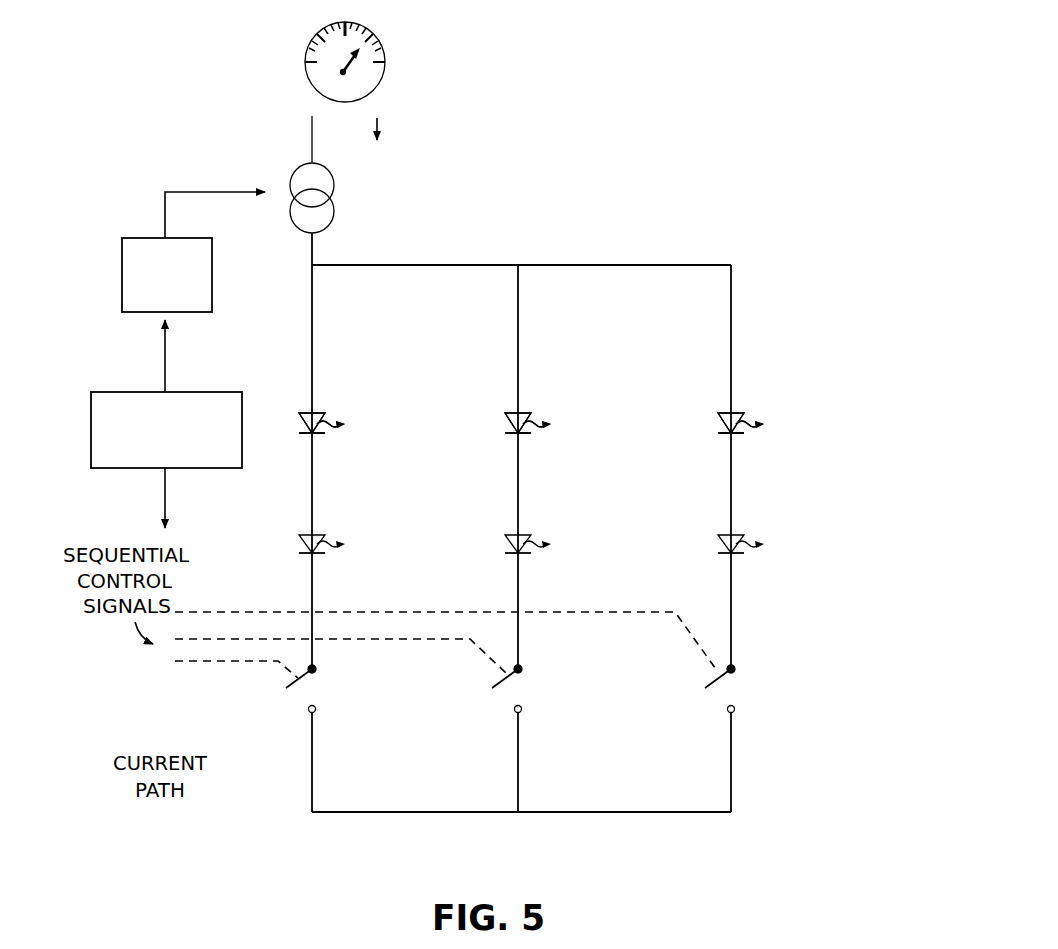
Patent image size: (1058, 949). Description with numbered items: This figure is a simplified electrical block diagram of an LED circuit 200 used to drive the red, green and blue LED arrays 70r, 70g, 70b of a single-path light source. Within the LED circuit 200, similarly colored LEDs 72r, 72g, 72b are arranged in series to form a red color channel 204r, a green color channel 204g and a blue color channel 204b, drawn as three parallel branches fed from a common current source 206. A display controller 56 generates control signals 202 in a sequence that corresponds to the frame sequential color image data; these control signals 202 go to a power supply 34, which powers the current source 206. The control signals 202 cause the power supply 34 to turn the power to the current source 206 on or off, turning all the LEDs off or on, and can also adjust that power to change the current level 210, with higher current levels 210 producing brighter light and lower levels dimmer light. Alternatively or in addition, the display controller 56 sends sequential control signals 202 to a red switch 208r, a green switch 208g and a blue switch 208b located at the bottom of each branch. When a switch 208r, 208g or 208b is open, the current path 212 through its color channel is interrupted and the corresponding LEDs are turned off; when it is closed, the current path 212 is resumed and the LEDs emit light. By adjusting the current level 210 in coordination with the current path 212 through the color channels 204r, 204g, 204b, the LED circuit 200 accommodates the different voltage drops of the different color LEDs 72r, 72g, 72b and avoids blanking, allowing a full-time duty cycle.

The LED circuit 200 is at (685, 208).
The current level 210 is at (375, 33).
The current source 206 is at (450, 160).
The power supply 34 is at (203, 238).
The display controller 56 is at (229, 392).
The control signals 202 is at (168, 342).
The red LED array 70r is at (314, 334).
The green LED array 70g is at (520, 334).
The blue LED array 70b is at (733, 334).
The red LEDs 72r is at (318, 412).
The green LEDs 72g is at (524, 412).
The blue LEDs 72b is at (737, 412).
The red color channel 204r is at (371, 396).
The green color channel 204g is at (579, 396).
The blue color channel 204b is at (791, 396).
The switch SW_R 208r is at (382, 680).
The switch SW_G 208g is at (592, 680).
The switch SW_B 208b is at (797, 680).
The current path 212 is at (310, 757).